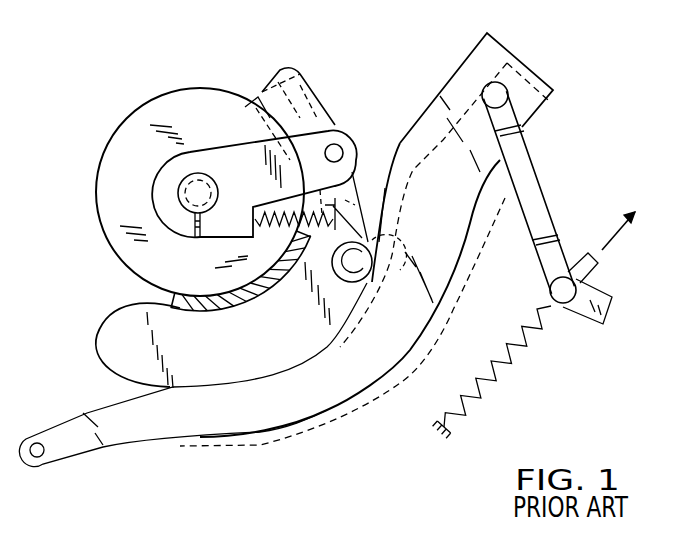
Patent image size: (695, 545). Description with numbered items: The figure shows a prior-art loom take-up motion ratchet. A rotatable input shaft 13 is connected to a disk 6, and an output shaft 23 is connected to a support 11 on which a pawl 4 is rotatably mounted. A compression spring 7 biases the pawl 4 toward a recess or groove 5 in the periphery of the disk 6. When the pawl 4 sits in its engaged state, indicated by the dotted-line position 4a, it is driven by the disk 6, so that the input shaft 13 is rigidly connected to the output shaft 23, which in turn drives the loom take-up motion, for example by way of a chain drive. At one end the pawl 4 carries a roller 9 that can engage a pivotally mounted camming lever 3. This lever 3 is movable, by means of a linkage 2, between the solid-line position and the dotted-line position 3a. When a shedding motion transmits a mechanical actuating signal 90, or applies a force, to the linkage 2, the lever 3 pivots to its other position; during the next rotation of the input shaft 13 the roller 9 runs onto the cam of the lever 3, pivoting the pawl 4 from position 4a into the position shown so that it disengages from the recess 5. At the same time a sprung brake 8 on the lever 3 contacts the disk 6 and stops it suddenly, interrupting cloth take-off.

The linkage 2 is at (550, 216).
The lever 3 is at (450, 93).
The disengaged position of the lever 3a is at (528, 180).
The pawl 4 is at (303, 84).
The engaged position of the pawl 4a is at (272, 72).
The recess or groove 5 is at (257, 202).
The disk 6 is at (138, 122).
The compression spring 7 is at (240, 122).
The sprung brake 8 is at (180, 306).
The roller 9 is at (345, 282).
The support 11 is at (283, 110).
The input shaft 13 is at (186, 188).
The output shaft 23 is at (178, 193).
The mechanical actuating signal 90 is at (615, 238).